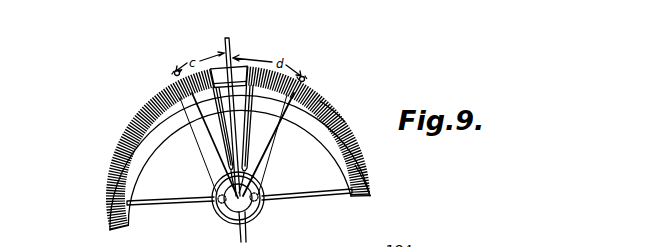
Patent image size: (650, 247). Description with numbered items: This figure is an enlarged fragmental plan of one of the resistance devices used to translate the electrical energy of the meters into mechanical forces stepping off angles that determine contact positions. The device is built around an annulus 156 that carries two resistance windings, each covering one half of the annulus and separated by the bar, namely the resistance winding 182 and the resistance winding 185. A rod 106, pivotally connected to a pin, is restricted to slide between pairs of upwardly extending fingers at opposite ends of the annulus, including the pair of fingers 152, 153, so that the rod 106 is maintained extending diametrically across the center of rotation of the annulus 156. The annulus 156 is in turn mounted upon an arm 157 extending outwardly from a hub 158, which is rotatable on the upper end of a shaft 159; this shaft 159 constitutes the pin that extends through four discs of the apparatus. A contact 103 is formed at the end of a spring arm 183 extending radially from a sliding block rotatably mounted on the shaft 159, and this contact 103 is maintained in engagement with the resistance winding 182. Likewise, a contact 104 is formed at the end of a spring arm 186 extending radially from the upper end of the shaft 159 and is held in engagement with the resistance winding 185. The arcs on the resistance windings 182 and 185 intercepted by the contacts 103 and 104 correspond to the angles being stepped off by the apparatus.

The contact 103 is at (171, 72).
The contact 104 is at (304, 77).
The rod 106 is at (230, 40).
The finger 152 is at (217, 74).
The finger 153 is at (241, 71).
The annulus 156 is at (343, 111).
The arm 157 is at (166, 202).
The hub 158 is at (230, 222).
The shaft 159 is at (221, 204).
The resistance winding 182 is at (114, 149).
The spring arm 183 is at (200, 148).
The resistance winding 185 is at (366, 159).
The spring arm 186 is at (268, 156).